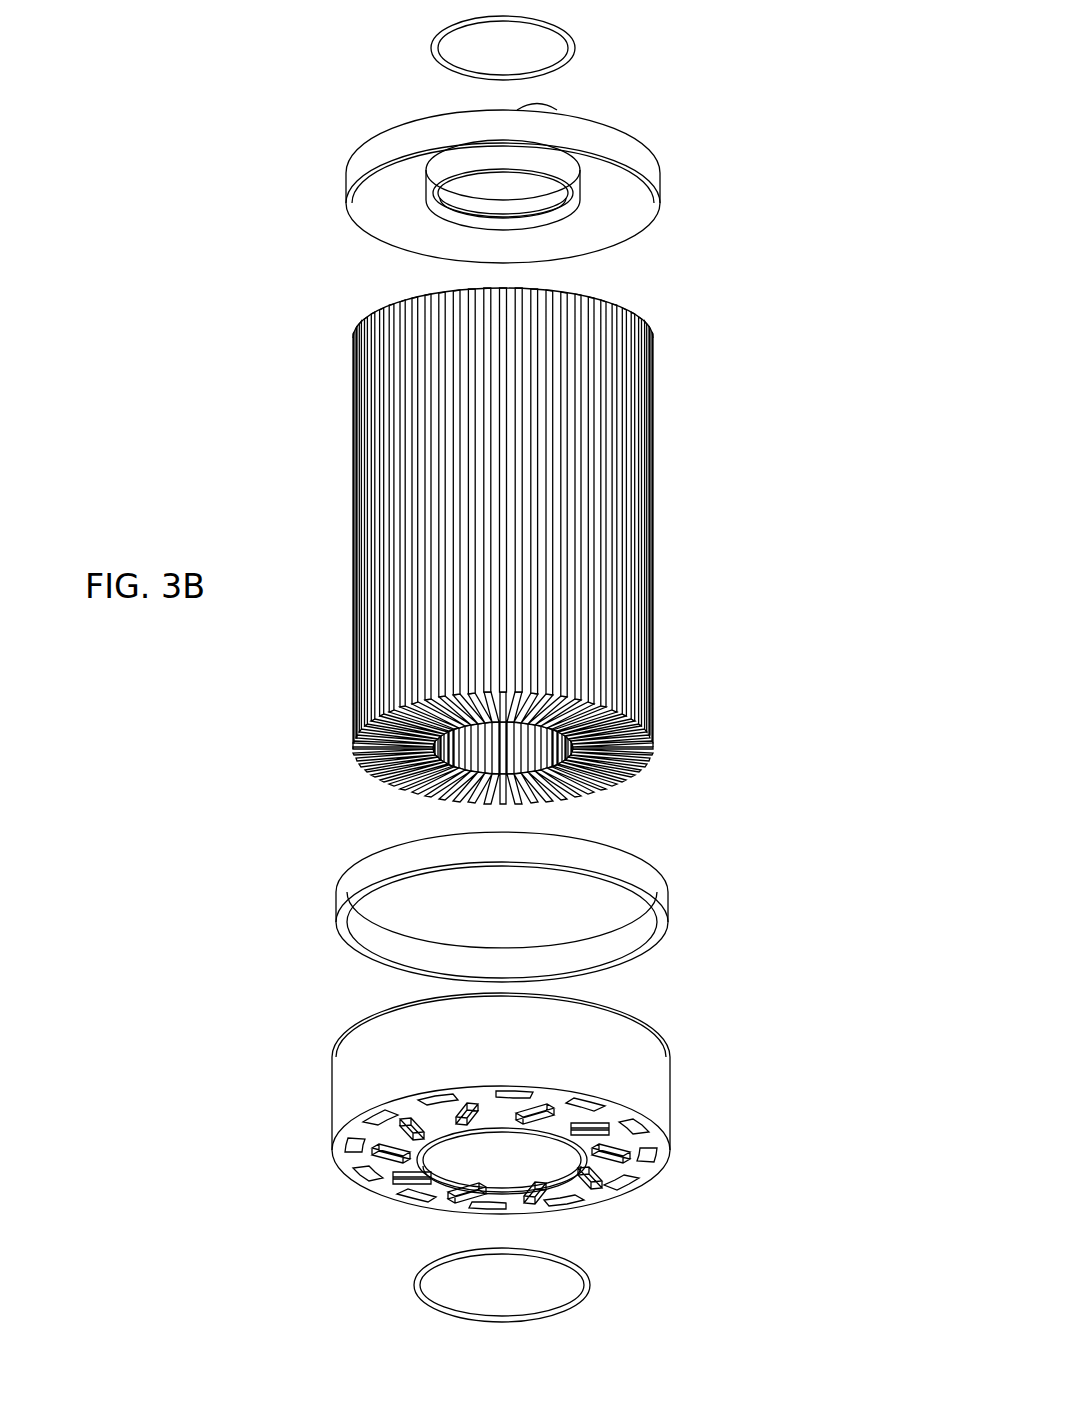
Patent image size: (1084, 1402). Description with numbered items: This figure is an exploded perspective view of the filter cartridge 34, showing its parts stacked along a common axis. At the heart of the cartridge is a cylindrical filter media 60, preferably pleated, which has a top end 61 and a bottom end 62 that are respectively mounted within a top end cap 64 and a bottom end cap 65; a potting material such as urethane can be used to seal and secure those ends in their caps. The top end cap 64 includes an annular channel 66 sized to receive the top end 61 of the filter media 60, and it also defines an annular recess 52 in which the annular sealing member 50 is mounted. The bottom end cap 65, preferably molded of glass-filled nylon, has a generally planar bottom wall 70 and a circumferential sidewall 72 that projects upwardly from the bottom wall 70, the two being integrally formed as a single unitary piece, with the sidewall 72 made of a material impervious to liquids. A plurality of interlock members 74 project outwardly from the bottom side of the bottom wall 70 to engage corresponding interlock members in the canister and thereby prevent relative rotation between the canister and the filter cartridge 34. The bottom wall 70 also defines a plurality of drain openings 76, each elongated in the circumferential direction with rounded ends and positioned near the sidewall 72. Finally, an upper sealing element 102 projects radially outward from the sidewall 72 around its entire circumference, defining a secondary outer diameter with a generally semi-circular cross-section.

The filter cartridge 34 is at (570, 539).
The annular sealing member 50 is at (561, 33).
The annular recess 52 is at (512, 200).
The cylindrical filter media 60 is at (645, 580).
The top end 61 is at (632, 315).
The bottom end 62 is at (643, 768).
The top end cap 64 is at (534, 194).
The bottom end cap 65 is at (507, 1114).
The annular channel 66 is at (387, 212).
The bottom wall 70 is at (637, 1182).
The circumferential sidewall 72 is at (344, 1100).
The interlock members 74 is at (382, 1188).
The drain openings 76 is at (660, 1175).
The upper sealing element 102 is at (633, 1020).